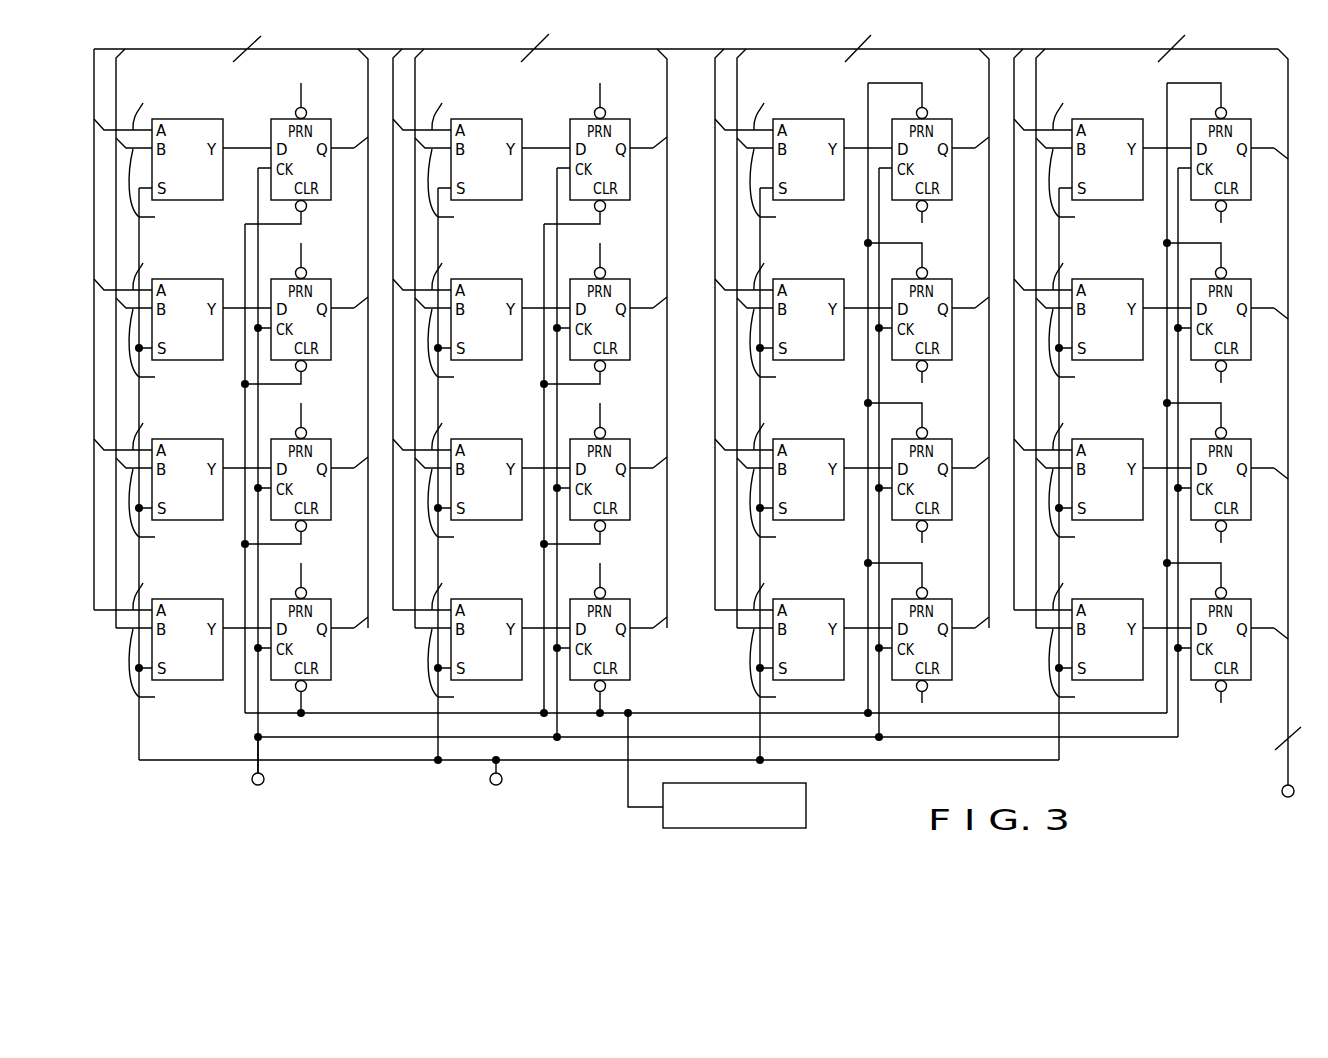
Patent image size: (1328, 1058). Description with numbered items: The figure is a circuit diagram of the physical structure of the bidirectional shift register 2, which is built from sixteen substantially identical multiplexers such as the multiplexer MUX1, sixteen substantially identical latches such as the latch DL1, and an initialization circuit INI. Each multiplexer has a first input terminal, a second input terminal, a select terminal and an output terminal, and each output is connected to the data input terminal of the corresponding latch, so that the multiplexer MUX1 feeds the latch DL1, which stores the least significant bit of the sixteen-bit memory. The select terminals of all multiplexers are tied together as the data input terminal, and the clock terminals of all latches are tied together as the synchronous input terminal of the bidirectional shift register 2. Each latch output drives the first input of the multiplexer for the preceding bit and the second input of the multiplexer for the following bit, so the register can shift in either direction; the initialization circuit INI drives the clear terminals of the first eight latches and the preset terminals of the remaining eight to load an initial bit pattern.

The bidirectional shift register 2 is at (711, 433).
The multiplexer MUX1 is at (182, 138).
The latch DL1 is at (306, 150).
The initialization circuit INI is at (806, 798).